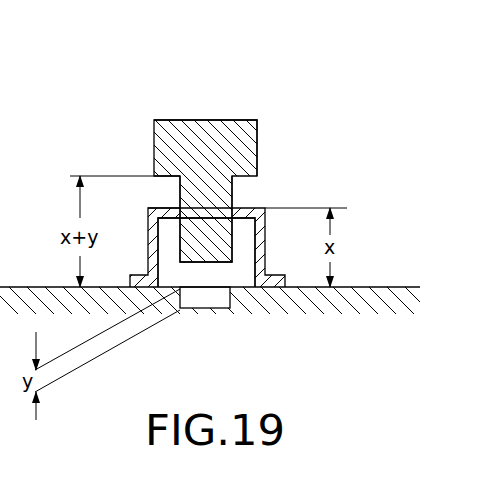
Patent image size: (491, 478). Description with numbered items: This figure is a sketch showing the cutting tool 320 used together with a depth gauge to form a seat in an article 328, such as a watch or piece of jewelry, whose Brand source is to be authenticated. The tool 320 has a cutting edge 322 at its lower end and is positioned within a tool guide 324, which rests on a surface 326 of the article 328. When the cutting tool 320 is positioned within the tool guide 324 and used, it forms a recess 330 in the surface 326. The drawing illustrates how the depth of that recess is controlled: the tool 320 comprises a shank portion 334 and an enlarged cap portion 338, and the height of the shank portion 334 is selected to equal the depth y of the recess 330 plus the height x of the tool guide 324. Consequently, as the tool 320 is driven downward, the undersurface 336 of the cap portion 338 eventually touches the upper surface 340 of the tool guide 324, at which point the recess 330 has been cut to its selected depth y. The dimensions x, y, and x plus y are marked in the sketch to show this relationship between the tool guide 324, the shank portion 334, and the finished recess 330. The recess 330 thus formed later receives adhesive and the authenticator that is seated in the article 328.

The tool 320 is at (214, 112).
The cutting edge 322 is at (245, 282).
The tool guide 324 is at (260, 207).
The surface 326 is at (405, 266).
The article 328 is at (387, 307).
The recess 330 is at (195, 297).
The shank portion 334 is at (232, 182).
The undersurface 336 is at (153, 183).
The cap portion 338 is at (176, 120).
The upper surface 340 is at (163, 206).